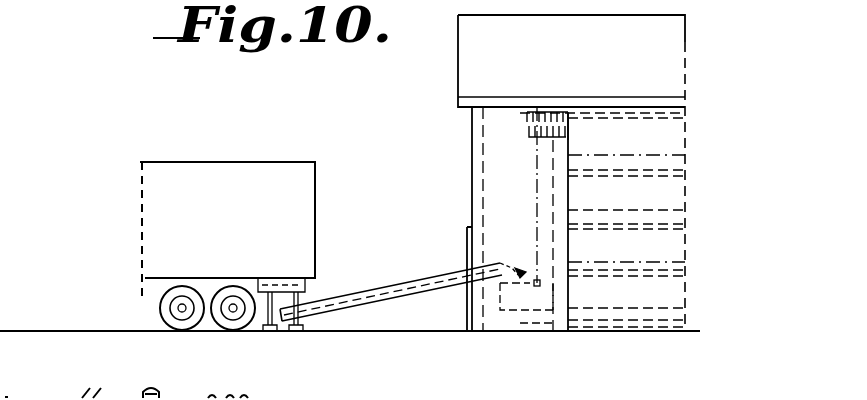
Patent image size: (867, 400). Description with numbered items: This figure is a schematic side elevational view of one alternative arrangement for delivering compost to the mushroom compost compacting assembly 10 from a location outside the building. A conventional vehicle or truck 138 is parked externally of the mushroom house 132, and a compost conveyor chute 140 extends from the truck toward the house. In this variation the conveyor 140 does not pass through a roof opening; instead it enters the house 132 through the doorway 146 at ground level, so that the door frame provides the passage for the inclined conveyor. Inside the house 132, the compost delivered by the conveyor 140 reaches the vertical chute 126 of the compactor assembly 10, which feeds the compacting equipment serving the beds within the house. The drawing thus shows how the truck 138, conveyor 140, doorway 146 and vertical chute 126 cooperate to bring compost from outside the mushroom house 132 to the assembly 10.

The compactor assembly 10 is at (521, 332).
The vertical chute 126 is at (538, 96).
The mushroom house 132 is at (664, 138).
The truck 138 is at (272, 178).
The compost conveyor chute 140 is at (405, 283).
The doorway 146 is at (463, 298).